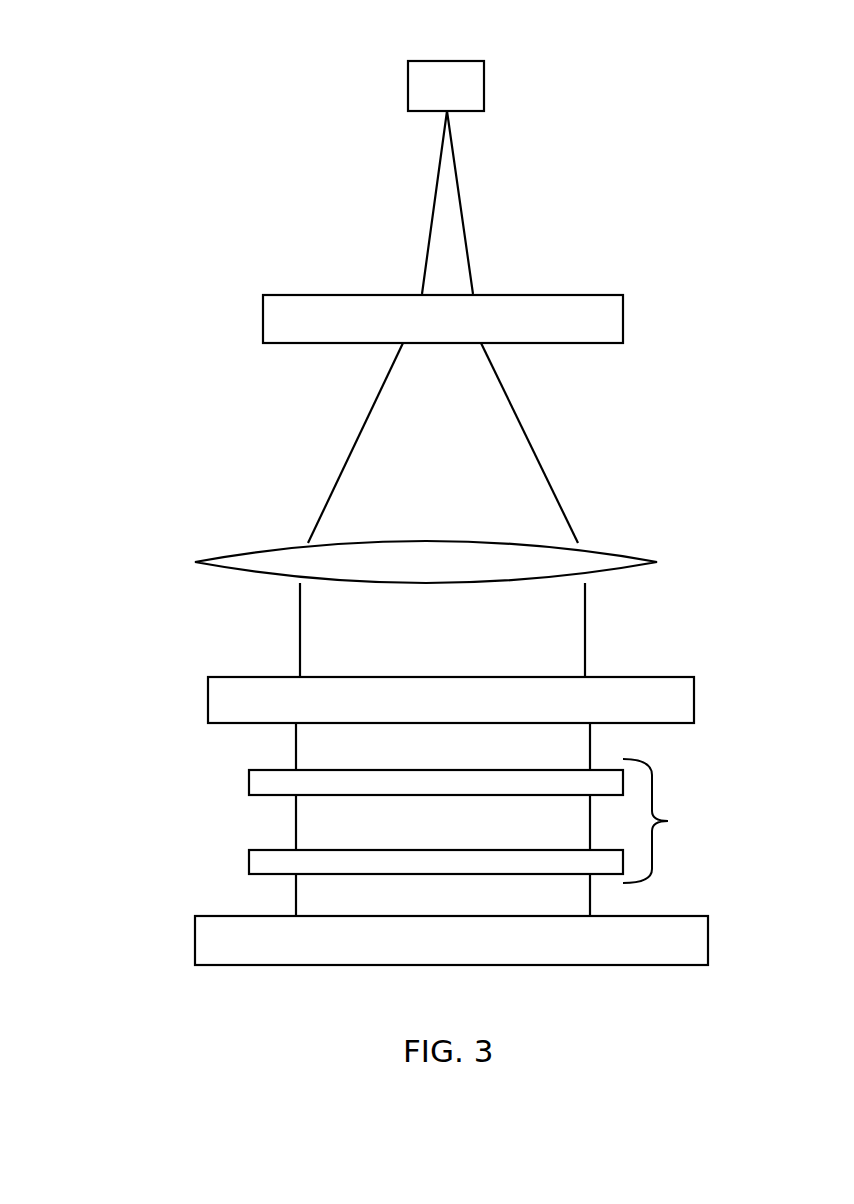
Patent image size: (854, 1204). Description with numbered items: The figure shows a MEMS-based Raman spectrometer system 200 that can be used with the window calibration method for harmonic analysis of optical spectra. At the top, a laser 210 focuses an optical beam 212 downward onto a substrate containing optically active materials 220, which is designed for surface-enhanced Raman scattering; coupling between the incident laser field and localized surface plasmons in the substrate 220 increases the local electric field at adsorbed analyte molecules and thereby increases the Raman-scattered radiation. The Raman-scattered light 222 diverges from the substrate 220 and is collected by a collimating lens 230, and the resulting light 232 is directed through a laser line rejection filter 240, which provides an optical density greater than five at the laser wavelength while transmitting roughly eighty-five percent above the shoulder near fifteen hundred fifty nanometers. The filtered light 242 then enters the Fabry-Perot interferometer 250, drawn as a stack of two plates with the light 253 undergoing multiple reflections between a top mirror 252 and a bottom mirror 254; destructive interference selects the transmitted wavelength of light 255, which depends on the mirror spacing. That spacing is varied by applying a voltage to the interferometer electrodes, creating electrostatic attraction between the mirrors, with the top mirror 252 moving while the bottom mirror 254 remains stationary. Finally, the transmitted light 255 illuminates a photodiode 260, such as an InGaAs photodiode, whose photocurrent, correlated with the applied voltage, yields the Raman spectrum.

The MEMS-based Raman spectrometer system 200 is at (106, 59).
The laser 210 is at (408, 92).
The optical beam 212 is at (432, 221).
The substrate containing optically active materials 220 is at (263, 322).
The Raman-scattered light 222 is at (350, 454).
The collimating lens 230 is at (195, 562).
The resulting light 232 is at (300, 633).
The laser line rejection filter 240 is at (208, 703).
The filtered light 242 is at (296, 750).
The Fabry-Perot interferometer 250 is at (672, 821).
The top mirror 252 is at (249, 786).
The light undergoing multiple reflections between the mirrors 253 is at (296, 830).
The bottom mirror 254 is at (249, 866).
The transmitted light 255 is at (296, 900).
The photodiode 260 is at (195, 944).